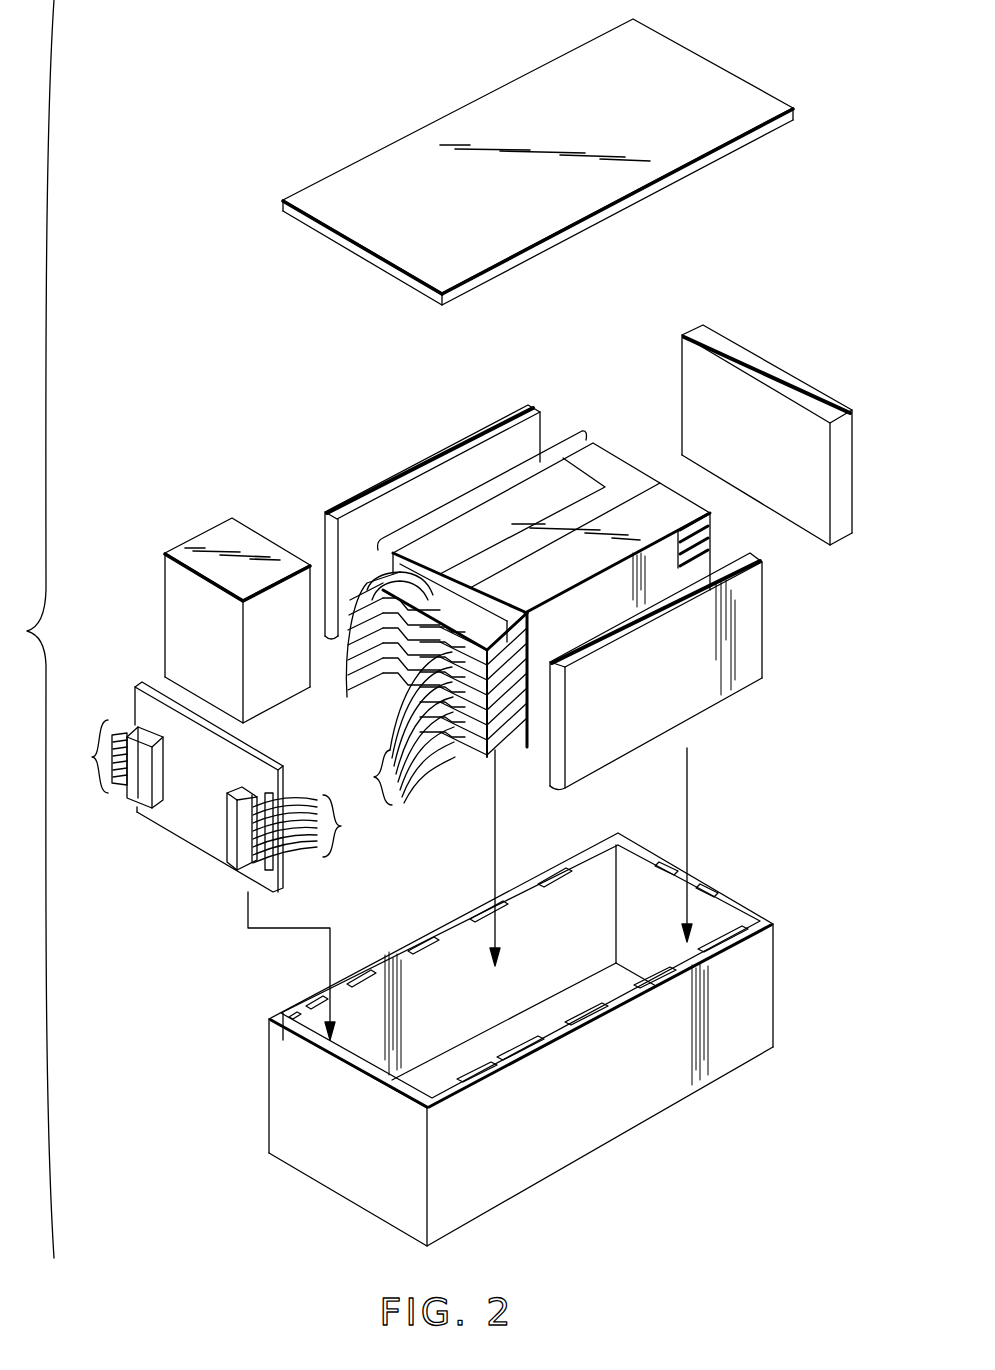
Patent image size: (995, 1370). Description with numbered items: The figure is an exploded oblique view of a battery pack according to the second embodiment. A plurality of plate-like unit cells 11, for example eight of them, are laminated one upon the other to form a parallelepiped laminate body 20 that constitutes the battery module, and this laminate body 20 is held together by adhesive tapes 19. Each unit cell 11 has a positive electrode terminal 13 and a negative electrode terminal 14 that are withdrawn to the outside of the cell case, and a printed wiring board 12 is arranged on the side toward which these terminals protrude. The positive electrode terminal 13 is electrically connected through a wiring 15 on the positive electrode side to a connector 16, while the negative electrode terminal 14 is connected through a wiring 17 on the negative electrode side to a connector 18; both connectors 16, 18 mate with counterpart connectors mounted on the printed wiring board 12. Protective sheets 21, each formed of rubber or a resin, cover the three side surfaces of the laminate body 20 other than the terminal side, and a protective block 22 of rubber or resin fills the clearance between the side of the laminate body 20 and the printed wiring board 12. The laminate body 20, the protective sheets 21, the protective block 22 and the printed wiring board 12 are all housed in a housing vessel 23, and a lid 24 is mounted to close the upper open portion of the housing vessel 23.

The unit cell 11 is at (703, 523).
The printed wiring board 12 is at (183, 823).
The positive electrode terminal 13 is at (418, 650).
The negative electrode terminal 14 is at (400, 587).
The wiring on the side of the positive electrode 15 is at (354, 757).
The connector on the side of the positive electrode 16 is at (237, 852).
The wiring on the side of the negative electrode 17 is at (340, 618).
The connector on the side of the negative electrode 18 is at (132, 788).
The adhesive tape 19 is at (628, 533).
The laminate body 20 is at (485, 476).
The protective sheet 21 is at (395, 480).
The protective block 22 is at (207, 543).
The housing vessel 23 is at (761, 1013).
The lid 24 is at (732, 88).